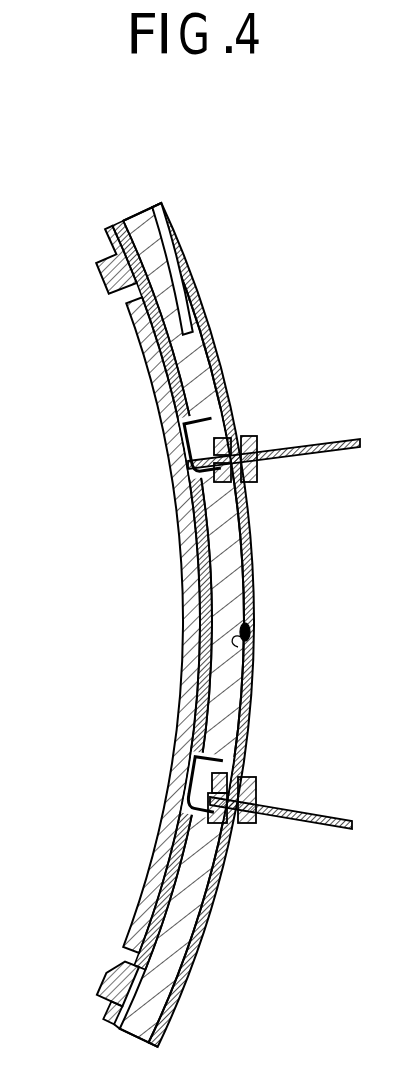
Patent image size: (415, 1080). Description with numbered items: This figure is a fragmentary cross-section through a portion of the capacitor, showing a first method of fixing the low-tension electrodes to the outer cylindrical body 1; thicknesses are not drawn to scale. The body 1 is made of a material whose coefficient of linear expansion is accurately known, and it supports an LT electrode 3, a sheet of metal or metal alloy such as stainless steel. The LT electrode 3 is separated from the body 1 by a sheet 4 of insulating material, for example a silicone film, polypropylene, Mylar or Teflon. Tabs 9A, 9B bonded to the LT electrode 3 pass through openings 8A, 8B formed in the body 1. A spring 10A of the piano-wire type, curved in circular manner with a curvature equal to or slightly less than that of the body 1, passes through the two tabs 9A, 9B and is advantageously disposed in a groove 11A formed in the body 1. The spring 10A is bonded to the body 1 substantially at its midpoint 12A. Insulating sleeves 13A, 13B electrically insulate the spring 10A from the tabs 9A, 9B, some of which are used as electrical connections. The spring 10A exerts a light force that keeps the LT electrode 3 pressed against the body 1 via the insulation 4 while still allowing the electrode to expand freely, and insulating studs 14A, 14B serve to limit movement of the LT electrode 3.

The outer cylindrical body 1 is at (230, 727).
The LT electrode 3 is at (187, 686).
The sheet of insulating material 4 is at (200, 604).
The opening 8A is at (213, 418).
The opening 8B is at (225, 762).
The tab 9A is at (318, 457).
The tab 9B is at (315, 812).
The spring 10A is at (252, 550).
The groove 11A is at (184, 270).
The midpoint of the spring 12A is at (251, 636).
The insulating sleeve 13A is at (256, 437).
The insulating sleeve 13B is at (247, 824).
The insulating stud 14A is at (112, 272).
The insulating stud 14B is at (112, 968).